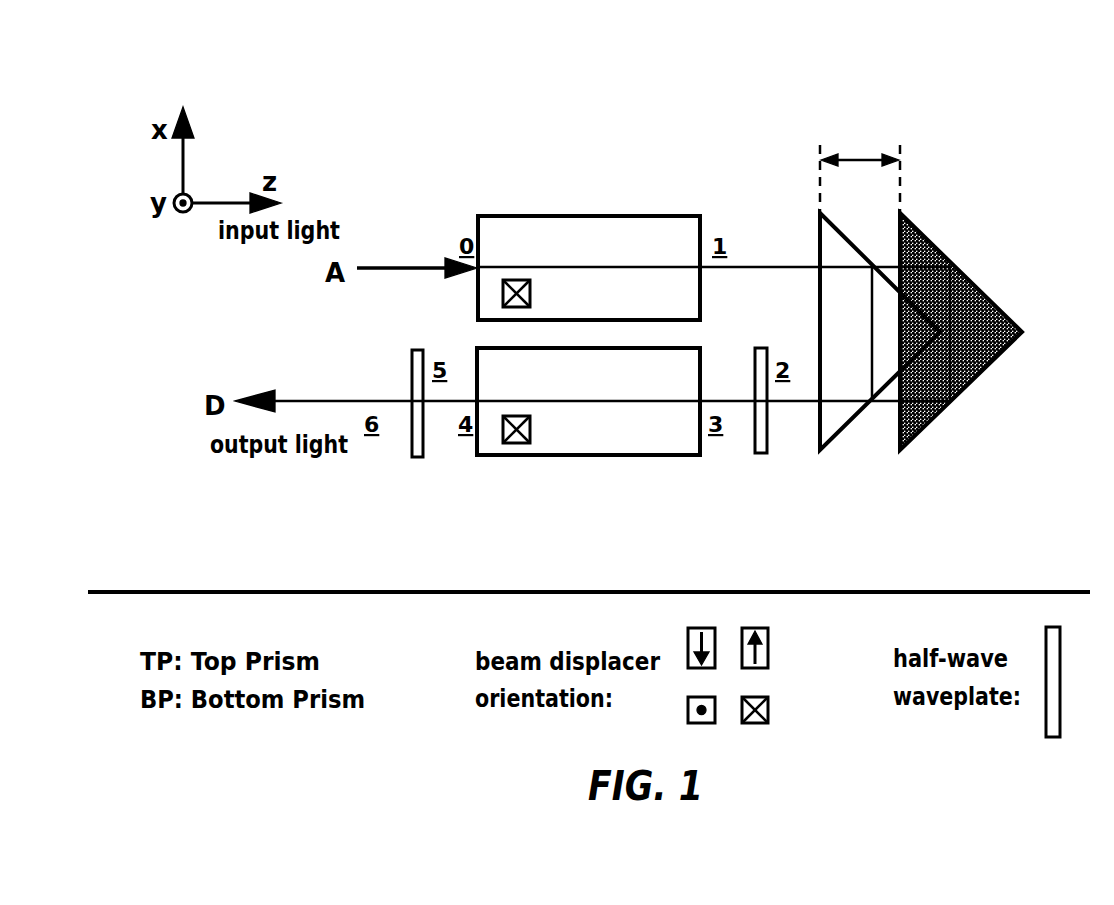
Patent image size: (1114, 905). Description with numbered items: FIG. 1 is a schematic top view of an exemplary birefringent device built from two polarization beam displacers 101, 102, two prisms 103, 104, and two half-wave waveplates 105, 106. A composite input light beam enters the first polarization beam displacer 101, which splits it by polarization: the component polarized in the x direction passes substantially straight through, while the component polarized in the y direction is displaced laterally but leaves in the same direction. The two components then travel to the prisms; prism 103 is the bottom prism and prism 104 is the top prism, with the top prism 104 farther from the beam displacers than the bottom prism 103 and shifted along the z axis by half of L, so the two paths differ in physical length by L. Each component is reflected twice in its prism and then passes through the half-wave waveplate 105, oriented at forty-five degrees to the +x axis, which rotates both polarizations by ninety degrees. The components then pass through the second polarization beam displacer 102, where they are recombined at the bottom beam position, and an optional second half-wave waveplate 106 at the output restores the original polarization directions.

The first polarization beam displacer 101 is at (700, 222).
The second polarization beam displacer 102 is at (700, 365).
The bottom prism 103 is at (845, 433).
The top prism 104 is at (1003, 358).
The half-wave waveplate 105 is at (761, 455).
The second half-wave waveplate 106 is at (417, 458).